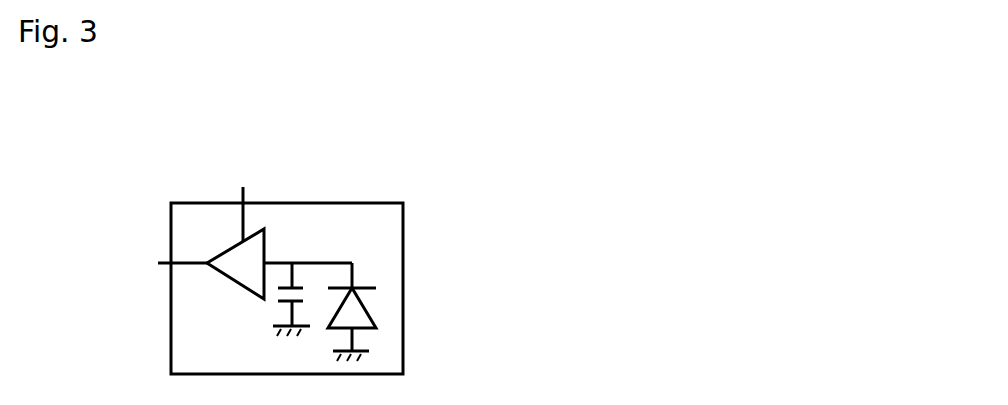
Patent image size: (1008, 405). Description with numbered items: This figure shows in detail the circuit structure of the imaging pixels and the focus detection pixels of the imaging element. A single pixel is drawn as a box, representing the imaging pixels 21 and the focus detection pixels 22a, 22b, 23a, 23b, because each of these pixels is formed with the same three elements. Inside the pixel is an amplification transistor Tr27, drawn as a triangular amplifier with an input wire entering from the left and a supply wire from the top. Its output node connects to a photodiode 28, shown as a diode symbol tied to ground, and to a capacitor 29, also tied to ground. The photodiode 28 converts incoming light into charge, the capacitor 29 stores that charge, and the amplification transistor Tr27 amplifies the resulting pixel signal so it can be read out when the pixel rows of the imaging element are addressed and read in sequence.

The amplification transistor Tr27 is at (252, 248).
The imaging pixels 21 is at (433, 280).
The focus detection pixel 22a is at (433, 280).
The focus detection pixel 22b is at (433, 280).
The focus detection pixel 23a is at (433, 280).
The focus detection pixel 23b is at (433, 280).
The photodiode 28 is at (356, 320).
The capacitor 29 is at (283, 295).